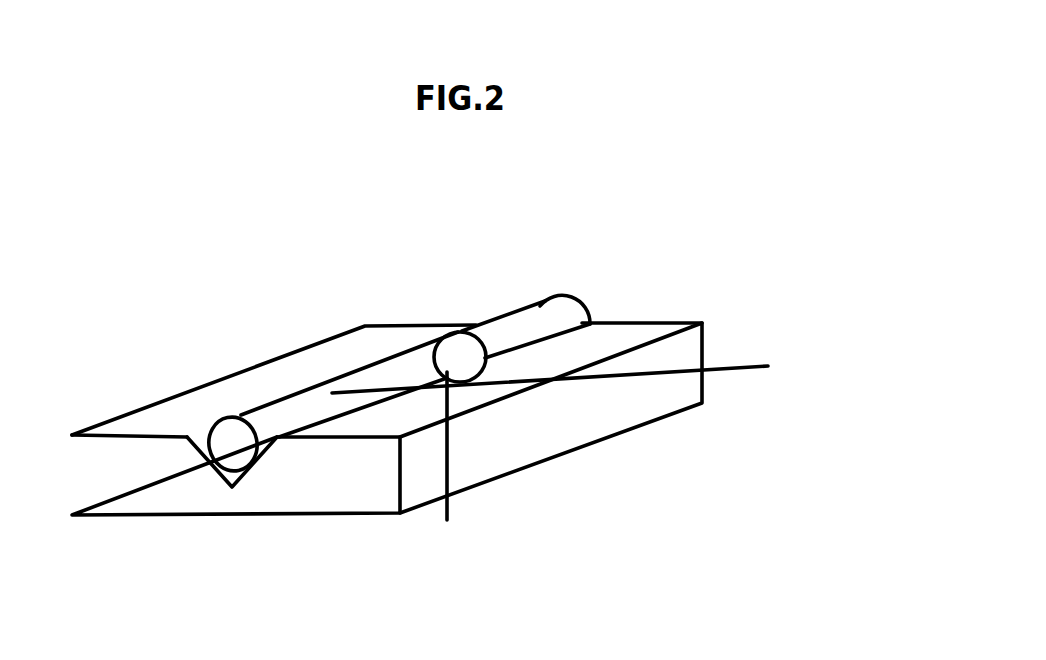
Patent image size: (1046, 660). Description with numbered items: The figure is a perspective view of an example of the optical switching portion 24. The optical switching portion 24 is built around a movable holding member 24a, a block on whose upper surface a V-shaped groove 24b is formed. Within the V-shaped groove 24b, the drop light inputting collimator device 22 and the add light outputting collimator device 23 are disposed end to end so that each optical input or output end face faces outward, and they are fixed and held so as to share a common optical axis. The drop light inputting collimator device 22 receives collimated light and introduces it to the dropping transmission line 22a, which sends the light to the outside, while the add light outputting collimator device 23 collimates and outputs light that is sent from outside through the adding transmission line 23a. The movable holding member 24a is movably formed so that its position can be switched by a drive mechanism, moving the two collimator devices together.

The drop light inputting collimator device 22 is at (273, 413).
The dropping transmission line 22a is at (745, 362).
The add light outputting collimator device 23 is at (511, 332).
The adding transmission line 23a is at (447, 510).
The optical switching portion 24 is at (720, 417).
The movable holding member 24a is at (557, 433).
The V-shaped groove 24b is at (396, 373).